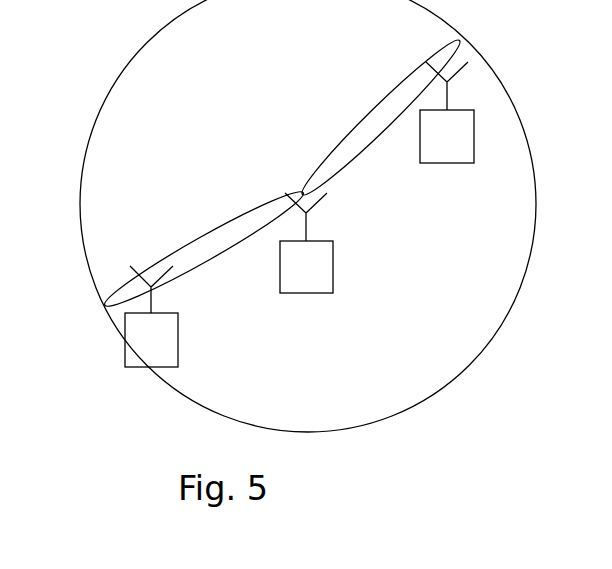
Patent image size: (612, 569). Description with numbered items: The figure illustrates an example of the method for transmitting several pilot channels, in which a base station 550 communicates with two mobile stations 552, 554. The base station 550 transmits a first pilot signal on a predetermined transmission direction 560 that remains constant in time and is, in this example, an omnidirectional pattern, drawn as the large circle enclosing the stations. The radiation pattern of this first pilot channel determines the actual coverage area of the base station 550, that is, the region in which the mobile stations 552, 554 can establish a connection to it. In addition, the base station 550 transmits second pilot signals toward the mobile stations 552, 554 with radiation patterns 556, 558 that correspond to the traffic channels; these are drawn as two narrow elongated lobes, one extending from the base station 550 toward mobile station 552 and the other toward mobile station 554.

The predetermined transmission direction 560 is at (137, 50).
The radiation pattern 556 is at (375, 98).
The radiation pattern 558 is at (203, 233).
The base station 550 is at (333, 256).
The mobile station 552 is at (475, 127).
The mobile station 554 is at (179, 332).